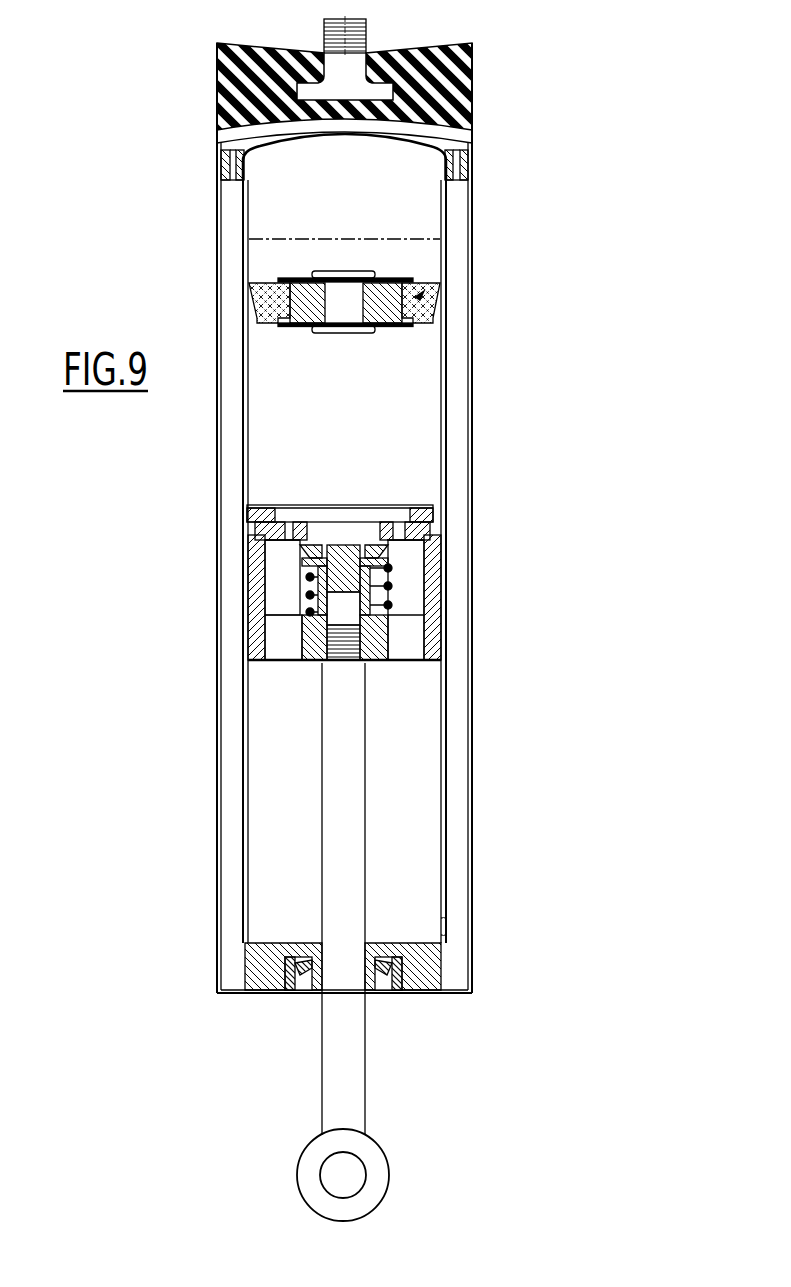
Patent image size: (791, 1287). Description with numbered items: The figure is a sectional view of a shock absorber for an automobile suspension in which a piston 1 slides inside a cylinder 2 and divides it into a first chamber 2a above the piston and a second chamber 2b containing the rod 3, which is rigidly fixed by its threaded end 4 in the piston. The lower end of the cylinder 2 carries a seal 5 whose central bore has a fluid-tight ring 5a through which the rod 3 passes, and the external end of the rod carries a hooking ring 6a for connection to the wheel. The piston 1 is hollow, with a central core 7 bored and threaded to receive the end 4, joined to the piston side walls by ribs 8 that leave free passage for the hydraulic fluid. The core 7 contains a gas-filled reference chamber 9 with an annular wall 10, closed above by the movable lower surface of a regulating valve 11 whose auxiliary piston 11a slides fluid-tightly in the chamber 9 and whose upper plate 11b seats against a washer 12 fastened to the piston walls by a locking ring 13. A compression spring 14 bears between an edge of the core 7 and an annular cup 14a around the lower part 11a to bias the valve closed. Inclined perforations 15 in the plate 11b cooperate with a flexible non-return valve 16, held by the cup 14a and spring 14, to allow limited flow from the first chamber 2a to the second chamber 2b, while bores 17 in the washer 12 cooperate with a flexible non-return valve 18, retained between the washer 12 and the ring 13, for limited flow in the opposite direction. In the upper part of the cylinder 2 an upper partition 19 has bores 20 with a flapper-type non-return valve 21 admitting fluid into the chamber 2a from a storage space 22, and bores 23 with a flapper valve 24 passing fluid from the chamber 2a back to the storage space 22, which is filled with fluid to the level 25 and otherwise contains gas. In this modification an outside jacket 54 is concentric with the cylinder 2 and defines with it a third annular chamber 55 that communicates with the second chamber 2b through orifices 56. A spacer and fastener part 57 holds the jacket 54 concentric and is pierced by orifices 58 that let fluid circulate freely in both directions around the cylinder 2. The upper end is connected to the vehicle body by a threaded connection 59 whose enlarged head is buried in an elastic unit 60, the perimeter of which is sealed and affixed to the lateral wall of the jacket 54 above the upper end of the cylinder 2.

The piston 1 is at (435, 624).
The cylinder 2 is at (447, 726).
The first chamber 2a is at (390, 421).
The second chamber 2b is at (403, 773).
The rod 3 is at (340, 795).
The threaded end 4 is at (372, 655).
The seal 5 is at (420, 968).
The fluid-tight ring 5a is at (390, 993).
The hooking ring 6a is at (373, 1170).
The central core 7 is at (318, 643).
The ribs 8 is at (285, 644).
The reference chamber 9 is at (303, 618).
The annular wall 10 is at (345, 605).
The regulating valve 11 is at (348, 535).
The auxiliary piston 11a is at (372, 575).
The upper plate 11b is at (385, 548).
The washer 12 is at (258, 528).
The locking ring 13 is at (256, 510).
The compression spring 14 is at (392, 606).
The annular cup 14a is at (388, 560).
The perforations 15 is at (300, 550).
The flexible non-return valve 16 is at (304, 566).
The bores 17 is at (297, 521).
The flexible non-return valve 18 is at (303, 521).
The upper partition 19 is at (380, 303).
The bores 20 is at (282, 310).
The flexible flapper-type non-return valve 21 is at (293, 325).
The hydraulic fluid storage space 22 is at (290, 208).
The bores 23 is at (418, 296).
The flexible flapper-type non-return valve 24 is at (397, 277).
The fluid level 25 is at (362, 235).
The outside jacket 54 is at (470, 840).
The third annular chamber 55 is at (453, 888).
The orifices 56 is at (445, 928).
The spacer and fastener part 57 is at (462, 154).
The orifices 58 is at (457, 170).
The threaded connection 59 is at (324, 25).
The elastic unit 60 is at (255, 88).